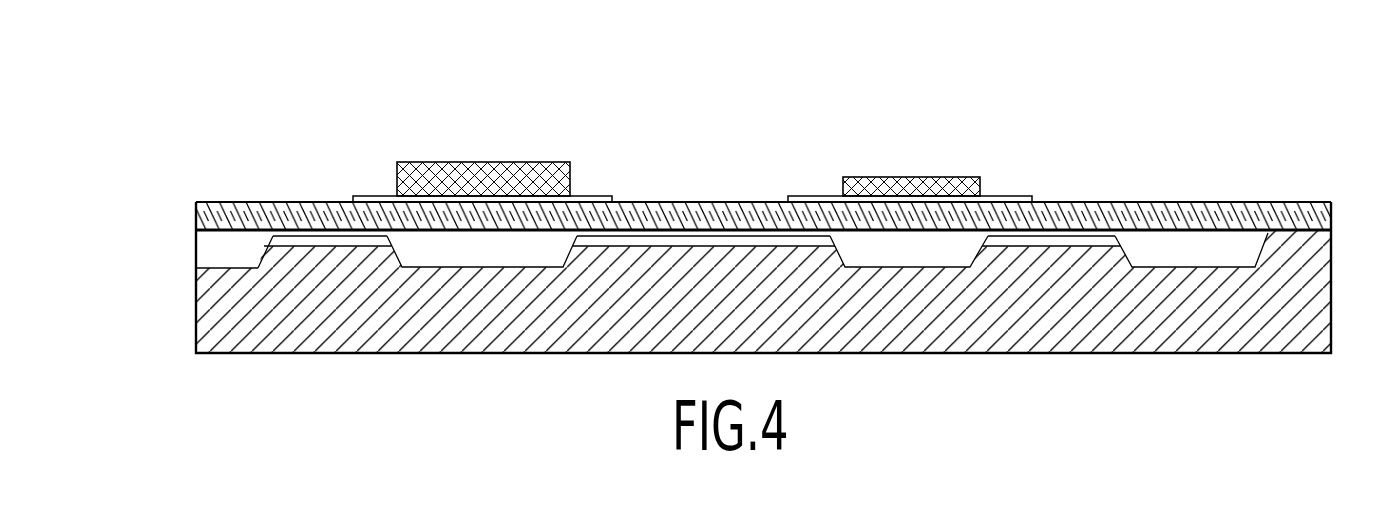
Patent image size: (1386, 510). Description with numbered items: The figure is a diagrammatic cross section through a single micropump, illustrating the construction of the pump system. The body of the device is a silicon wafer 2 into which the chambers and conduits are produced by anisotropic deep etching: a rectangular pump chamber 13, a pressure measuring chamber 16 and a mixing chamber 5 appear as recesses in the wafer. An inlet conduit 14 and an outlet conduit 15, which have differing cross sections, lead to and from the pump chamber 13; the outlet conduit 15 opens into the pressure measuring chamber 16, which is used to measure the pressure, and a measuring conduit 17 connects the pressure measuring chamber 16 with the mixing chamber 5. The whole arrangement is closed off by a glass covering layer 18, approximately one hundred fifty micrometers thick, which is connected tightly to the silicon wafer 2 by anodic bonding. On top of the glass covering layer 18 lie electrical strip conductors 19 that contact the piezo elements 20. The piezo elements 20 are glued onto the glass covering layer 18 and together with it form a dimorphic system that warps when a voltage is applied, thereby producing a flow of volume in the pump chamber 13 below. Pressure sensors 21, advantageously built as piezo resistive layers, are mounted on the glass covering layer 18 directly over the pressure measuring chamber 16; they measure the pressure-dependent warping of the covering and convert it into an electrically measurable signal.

The silicon wafer 2 is at (307, 307).
The mixing chamber 5 is at (1215, 253).
The pump chamber 13 is at (520, 253).
The inlet conduit 14 is at (315, 238).
The outlet conduit 15 is at (655, 242).
The pressure measuring chamber 16 is at (913, 255).
The measuring conduit 17 is at (1072, 240).
The glass covering layer 18 is at (1118, 210).
The electrical strip conductors 19 is at (588, 194).
The piezo elements 20 is at (430, 173).
The pressure sensors 21 is at (920, 187).